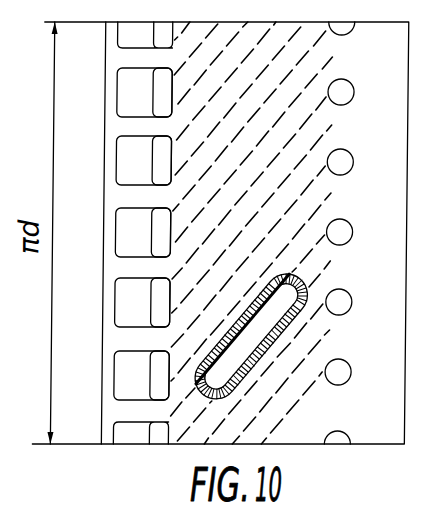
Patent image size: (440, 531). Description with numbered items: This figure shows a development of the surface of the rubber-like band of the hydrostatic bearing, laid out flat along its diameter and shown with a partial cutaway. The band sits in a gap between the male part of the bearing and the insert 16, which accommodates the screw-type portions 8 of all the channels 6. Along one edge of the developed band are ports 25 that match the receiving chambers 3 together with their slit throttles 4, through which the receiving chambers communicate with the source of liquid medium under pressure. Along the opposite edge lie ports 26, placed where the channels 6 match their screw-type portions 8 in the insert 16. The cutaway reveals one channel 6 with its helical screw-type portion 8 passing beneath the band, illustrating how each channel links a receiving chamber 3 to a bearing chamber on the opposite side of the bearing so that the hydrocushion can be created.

The receiving chamber 3 is at (154, 398).
The slit throttle 4 is at (130, 379).
The channel 6 is at (251, 331).
The screw-type portion 8 is at (260, 361).
The insert 16 is at (245, 373).
The port 25 is at (114, 372).
The port 26 is at (355, 149).